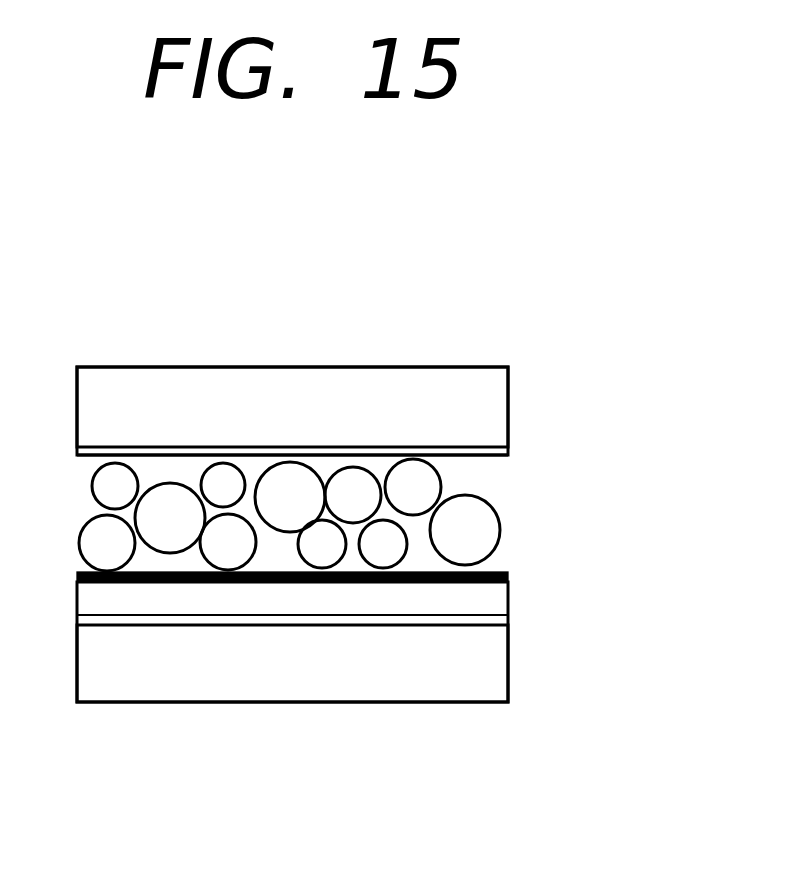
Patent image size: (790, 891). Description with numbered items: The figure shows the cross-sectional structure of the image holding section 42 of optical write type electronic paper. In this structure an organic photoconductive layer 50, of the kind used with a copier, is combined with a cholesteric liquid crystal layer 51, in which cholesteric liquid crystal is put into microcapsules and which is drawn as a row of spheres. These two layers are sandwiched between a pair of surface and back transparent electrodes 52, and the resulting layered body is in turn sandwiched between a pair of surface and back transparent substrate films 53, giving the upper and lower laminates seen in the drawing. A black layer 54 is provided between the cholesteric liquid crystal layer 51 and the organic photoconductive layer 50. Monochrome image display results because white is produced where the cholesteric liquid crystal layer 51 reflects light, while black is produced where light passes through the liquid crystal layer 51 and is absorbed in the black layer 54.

The image holding section 42 is at (378, 367).
The organic photoconductive layer 50 is at (413, 602).
The cholesteric liquid crystal layer 51 is at (287, 475).
The transparent electrodes 52 is at (473, 453).
The transparent substrate films 53 is at (493, 387).
The black layer 54 is at (497, 570).